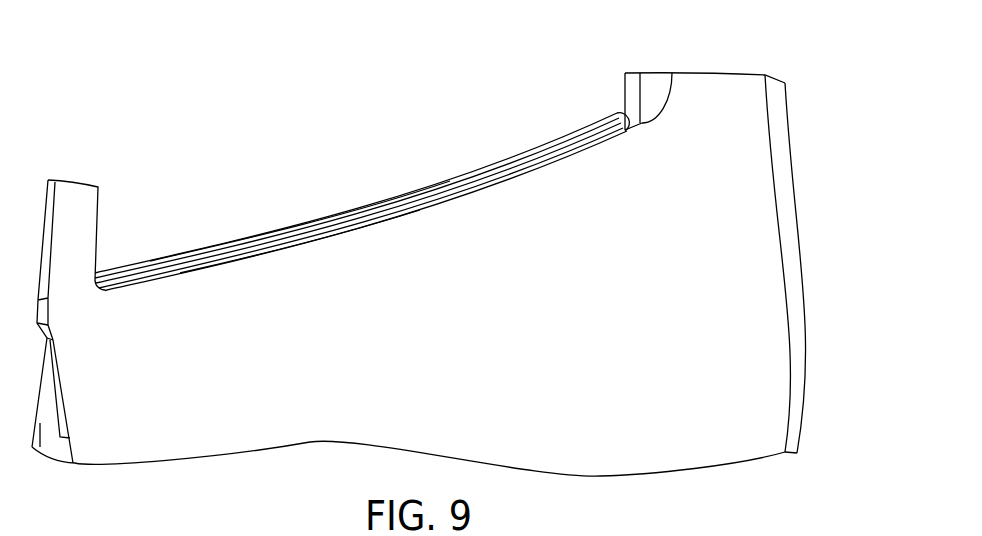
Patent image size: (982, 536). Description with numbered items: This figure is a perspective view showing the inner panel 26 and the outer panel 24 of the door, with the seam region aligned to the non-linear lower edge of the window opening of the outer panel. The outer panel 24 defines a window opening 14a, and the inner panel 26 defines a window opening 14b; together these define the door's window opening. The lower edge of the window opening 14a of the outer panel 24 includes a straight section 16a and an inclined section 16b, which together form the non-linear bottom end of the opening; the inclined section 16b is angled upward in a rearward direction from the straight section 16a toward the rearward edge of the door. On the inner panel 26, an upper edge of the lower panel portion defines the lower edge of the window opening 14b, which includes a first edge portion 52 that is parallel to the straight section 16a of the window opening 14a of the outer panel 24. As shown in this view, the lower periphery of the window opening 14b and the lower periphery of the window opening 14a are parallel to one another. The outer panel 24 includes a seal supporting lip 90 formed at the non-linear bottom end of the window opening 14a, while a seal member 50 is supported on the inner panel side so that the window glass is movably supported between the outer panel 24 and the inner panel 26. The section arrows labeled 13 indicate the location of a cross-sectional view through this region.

The section view 13 is at (483, 150).
The window opening 14a is at (424, 210).
The window opening 14b is at (313, 222).
The straight section 16a is at (177, 273).
The inclined section 16b is at (568, 155).
The outer panel 24 is at (723, 130).
The inner panel 26 is at (634, 93).
The seal member 50 is at (367, 217).
The first edge portion 52 is at (235, 243).
The seal supporting lip 90 is at (272, 249).